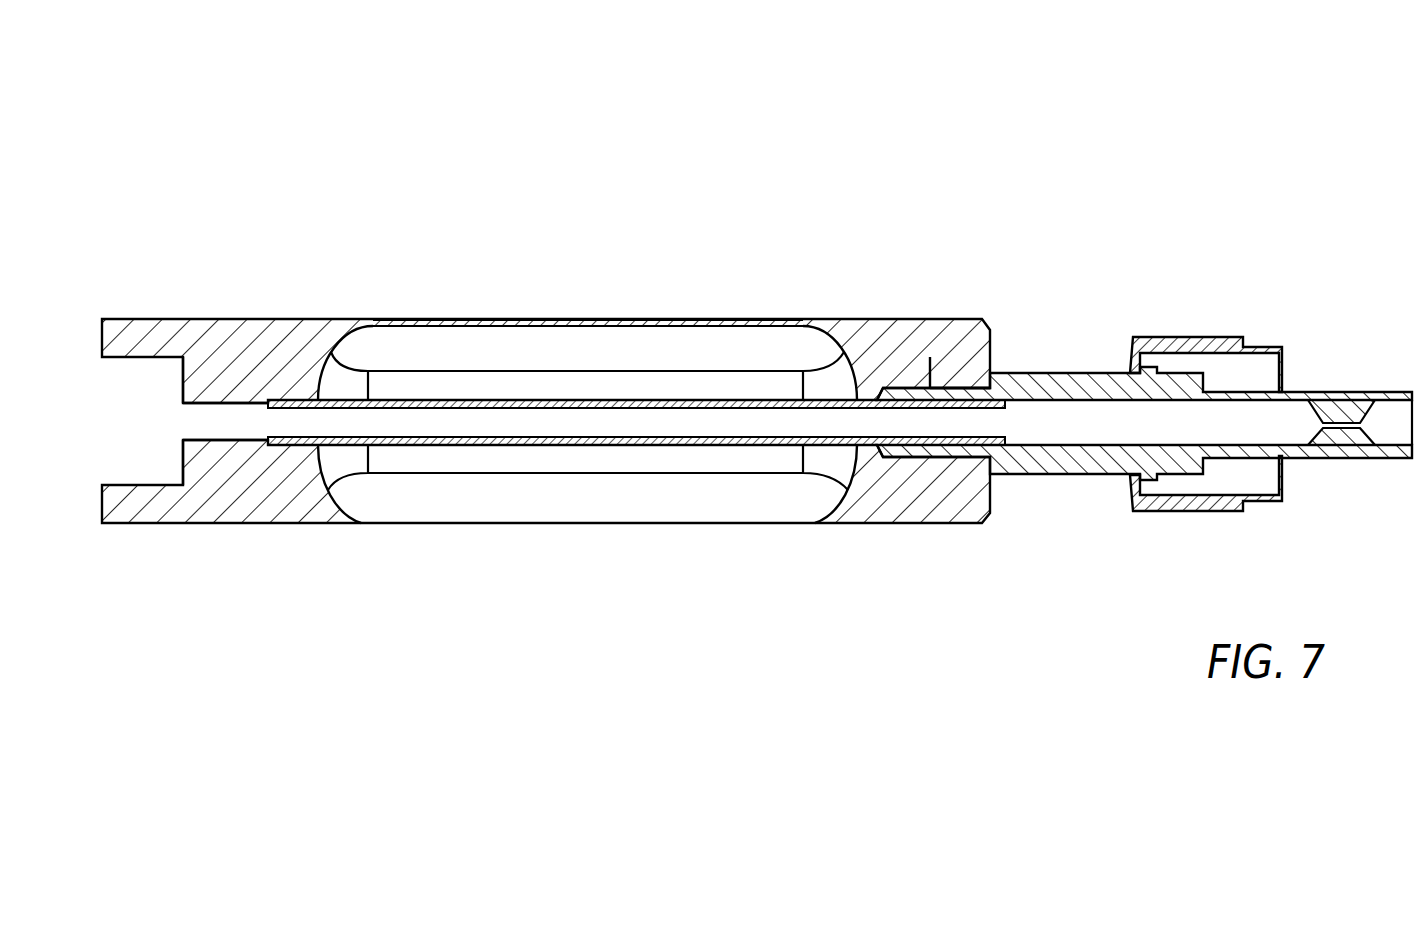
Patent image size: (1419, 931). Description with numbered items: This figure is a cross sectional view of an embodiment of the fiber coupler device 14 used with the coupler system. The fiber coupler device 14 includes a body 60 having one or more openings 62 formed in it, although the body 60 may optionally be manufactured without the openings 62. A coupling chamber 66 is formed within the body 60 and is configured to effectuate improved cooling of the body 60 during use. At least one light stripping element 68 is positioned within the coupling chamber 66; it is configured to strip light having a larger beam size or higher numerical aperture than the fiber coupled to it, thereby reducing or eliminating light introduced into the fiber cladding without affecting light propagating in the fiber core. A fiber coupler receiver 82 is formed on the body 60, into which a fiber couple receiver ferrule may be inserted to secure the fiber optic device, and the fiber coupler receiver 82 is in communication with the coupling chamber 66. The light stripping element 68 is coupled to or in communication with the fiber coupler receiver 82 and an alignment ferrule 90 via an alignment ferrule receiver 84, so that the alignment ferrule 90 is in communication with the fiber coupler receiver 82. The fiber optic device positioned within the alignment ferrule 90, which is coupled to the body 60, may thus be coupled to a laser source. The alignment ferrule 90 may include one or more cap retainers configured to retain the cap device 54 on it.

The fiber coupler device 14 is at (1170, 145).
The cap device 54 is at (1198, 337).
The body 60 is at (870, 320).
The openings 62 is at (708, 327).
The coupling chamber 66 is at (575, 347).
The light stripping element 68 is at (440, 402).
The fiber coupler receiver 82 is at (208, 415).
The alignment ferrule receiver 84 is at (930, 357).
The alignment ferrule 90 is at (1090, 373).